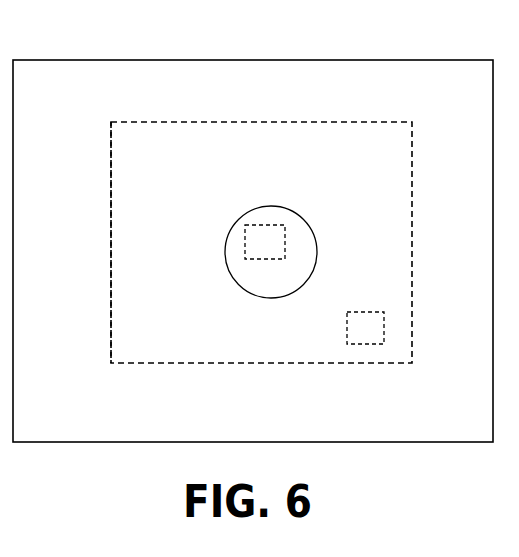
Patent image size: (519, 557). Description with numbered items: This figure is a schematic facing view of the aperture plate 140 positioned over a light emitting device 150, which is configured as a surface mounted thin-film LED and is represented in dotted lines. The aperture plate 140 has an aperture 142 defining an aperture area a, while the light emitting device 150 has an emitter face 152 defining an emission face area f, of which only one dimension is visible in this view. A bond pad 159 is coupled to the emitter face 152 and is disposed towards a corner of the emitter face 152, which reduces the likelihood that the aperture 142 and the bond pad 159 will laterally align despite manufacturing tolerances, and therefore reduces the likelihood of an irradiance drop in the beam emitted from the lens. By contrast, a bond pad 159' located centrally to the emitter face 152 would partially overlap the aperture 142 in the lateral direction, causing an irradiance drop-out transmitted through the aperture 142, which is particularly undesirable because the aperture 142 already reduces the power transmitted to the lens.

The aperture plate 140 is at (155, 92).
The light emitting device 150 is at (373, 108).
The emitter face 152 is at (130, 297).
The aperture 142 is at (230, 237).
The bond pad 159' is at (293, 215).
The bond pad 159 is at (327, 362).
The aperture area a is at (247, 275).
The emission face area f is at (140, 352).